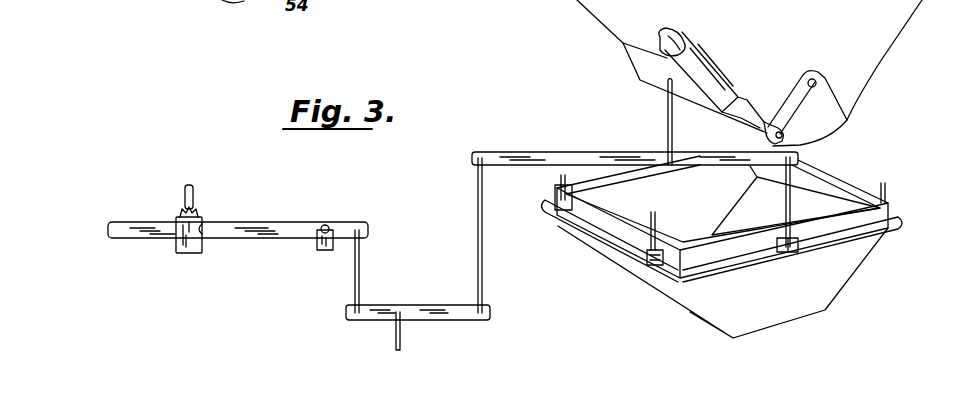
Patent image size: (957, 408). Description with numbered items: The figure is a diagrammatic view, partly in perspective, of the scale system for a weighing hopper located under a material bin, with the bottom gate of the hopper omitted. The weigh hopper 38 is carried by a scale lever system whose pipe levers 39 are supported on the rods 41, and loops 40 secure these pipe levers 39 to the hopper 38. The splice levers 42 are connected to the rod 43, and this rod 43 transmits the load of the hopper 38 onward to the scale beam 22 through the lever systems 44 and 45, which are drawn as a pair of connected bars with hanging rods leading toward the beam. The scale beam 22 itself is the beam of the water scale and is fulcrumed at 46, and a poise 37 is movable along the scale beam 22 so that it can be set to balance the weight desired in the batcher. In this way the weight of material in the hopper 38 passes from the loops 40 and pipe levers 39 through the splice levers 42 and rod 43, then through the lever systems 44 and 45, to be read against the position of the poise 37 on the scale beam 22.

The scale beam 22 is at (250, 222).
The poise 37 is at (182, 255).
The weigh hopper 38 is at (842, 278).
The pipe levers 39 is at (615, 246).
The loops 40 is at (655, 264).
The rods 41 is at (553, 183).
The splice levers 42 is at (737, 263).
The rod 43 is at (786, 203).
The lever system 44 is at (614, 158).
The lever system 45 is at (448, 313).
The fulcrum 46 is at (327, 226).